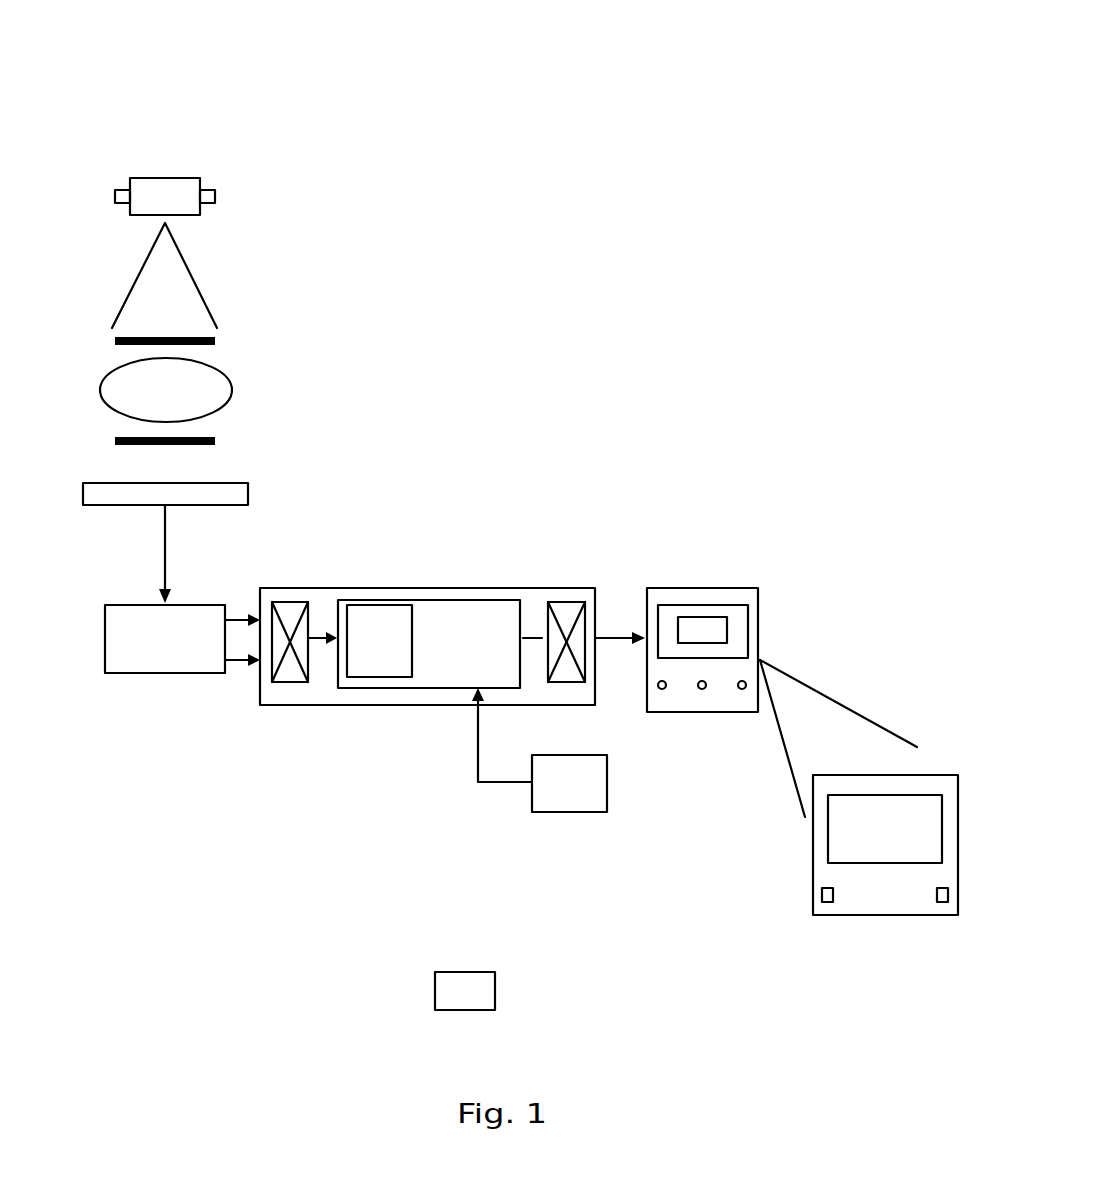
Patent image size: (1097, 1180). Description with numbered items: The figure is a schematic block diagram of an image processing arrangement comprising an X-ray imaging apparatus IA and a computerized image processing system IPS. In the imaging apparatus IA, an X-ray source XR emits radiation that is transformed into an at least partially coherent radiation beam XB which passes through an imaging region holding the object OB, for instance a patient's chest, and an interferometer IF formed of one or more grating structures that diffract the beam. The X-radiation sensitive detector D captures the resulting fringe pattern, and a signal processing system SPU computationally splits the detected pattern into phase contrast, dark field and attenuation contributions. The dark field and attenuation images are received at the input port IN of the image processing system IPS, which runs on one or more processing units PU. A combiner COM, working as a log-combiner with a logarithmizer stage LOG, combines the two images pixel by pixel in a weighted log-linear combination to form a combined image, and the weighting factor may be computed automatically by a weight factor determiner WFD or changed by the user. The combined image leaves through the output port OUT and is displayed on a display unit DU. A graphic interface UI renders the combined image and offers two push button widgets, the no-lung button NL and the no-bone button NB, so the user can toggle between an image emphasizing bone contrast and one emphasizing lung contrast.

The X-ray imaging apparatus IA is at (118, 115).
The X-ray source XR is at (213, 180).
The coherent radiation beam XB is at (193, 273).
The interferometer IF is at (215, 338).
The object OB is at (232, 388).
The X-radiation sensitive detector D is at (248, 486).
The signal processing system SPU is at (165, 639).
The image processing system IPS is at (435, 570).
The input port IN is at (295, 682).
The logarithmizer stage LOG is at (379, 641).
The combiner COM is at (429, 644).
The output port OUT is at (563, 602).
The weight factor determiner WFD is at (539, 750).
The processing unit PU is at (573, 848).
The display unit DU is at (705, 585).
The graphic interface UI is at (738, 623).
The no-bone button NB is at (828, 903).
The no-lung button NL is at (942, 917).